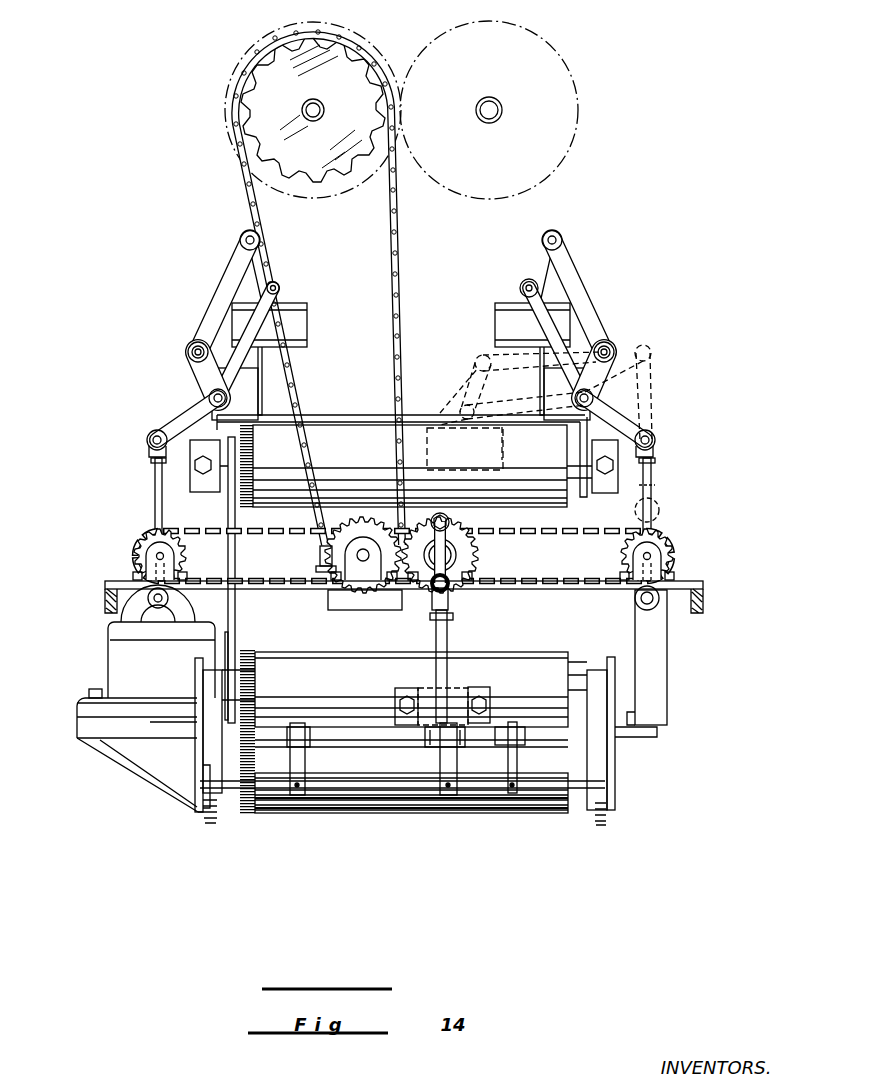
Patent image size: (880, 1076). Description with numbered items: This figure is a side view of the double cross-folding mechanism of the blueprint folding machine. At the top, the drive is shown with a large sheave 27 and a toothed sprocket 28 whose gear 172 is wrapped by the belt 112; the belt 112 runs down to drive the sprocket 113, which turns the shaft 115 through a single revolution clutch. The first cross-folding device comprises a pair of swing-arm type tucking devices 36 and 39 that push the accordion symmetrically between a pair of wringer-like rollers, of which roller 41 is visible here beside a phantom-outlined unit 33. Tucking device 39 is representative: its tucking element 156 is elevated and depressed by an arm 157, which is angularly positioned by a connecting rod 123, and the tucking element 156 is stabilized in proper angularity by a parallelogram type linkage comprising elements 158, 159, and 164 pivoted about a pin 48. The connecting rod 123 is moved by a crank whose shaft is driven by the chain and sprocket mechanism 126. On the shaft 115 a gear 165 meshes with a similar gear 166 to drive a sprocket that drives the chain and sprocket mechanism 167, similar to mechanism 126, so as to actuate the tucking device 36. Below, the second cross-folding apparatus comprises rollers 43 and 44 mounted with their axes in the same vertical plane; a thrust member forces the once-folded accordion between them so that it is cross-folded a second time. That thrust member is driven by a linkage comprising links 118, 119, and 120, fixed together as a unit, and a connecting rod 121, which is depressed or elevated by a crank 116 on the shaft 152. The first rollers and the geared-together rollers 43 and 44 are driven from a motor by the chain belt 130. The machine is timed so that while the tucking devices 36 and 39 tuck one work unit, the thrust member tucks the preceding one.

The pulley 27 is at (580, 101).
The drive sprocket 28 is at (275, 126).
The motor (phantom) 33 is at (422, 425).
The tucking device 36 is at (600, 290).
The tucking device 39 is at (233, 337).
The first cross-folding roller 41 is at (357, 445).
The second cross-folding roller 43 is at (338, 668).
The second cross-folding roller 44 is at (372, 810).
The pivot pin 48 is at (187, 352).
The belt 112 is at (393, 250).
The sprocket 113 is at (333, 528).
The shaft 115 is at (365, 599).
The crank 116 is at (456, 574).
The link 118 is at (517, 757).
The link 119 is at (306, 757).
The link 120 is at (452, 775).
The connecting rod 121 is at (449, 633).
The connecting rod 123 is at (153, 495).
The chain and sprocket mechanism 126 is at (131, 553).
The chain belt 130 is at (238, 623).
The shaft 152 is at (459, 555).
The tucking element 156 is at (308, 322).
The arm 157 is at (178, 421).
The linkage element 158 is at (198, 382).
The linkage element 159 is at (212, 303).
The linkage element 164 is at (241, 237).
The gear 165 is at (319, 557).
The gear 166 is at (455, 526).
The chain and sprocket mechanism 167 is at (666, 550).
The gear 172 is at (352, 175).